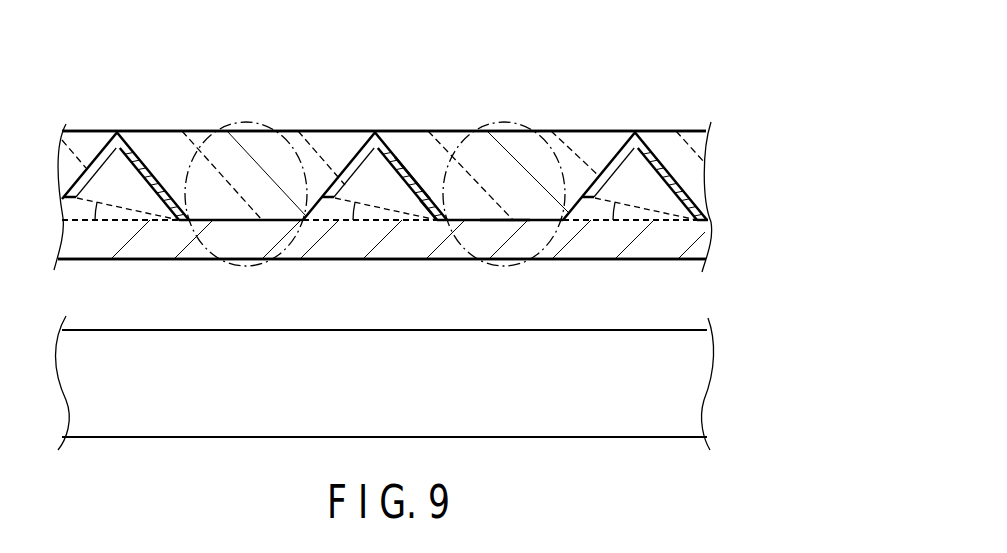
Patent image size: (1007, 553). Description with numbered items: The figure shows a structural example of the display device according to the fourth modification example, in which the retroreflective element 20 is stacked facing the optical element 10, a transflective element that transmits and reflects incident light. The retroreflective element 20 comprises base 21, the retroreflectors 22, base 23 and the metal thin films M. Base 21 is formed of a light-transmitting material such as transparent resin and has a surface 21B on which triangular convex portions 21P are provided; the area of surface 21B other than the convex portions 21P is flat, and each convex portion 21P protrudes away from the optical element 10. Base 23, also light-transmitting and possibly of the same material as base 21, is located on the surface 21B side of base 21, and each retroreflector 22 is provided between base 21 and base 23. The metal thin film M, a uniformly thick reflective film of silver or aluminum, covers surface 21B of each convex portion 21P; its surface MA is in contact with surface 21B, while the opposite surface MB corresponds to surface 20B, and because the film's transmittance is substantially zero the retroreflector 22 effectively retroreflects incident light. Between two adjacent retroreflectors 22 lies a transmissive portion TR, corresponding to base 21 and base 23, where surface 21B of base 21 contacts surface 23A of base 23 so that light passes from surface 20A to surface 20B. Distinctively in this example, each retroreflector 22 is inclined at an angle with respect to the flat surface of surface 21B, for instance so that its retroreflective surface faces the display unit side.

The optical element 10 is at (748, 348).
The retroreflective element 20 is at (748, 122).
The surface 20A is at (236, 272).
The surface 20B is at (181, 119).
The base 21 is at (702, 242).
The surface 21B is at (236, 208).
The convex portion 21P is at (112, 172).
The retroreflector 22 is at (143, 136).
The base 23 is at (693, 176).
The surface 23A is at (501, 235).
The transmissive portion TR is at (266, 121).
The metal thin film M is at (357, 158).
The surface MA is at (402, 216).
The surface MB is at (425, 163).